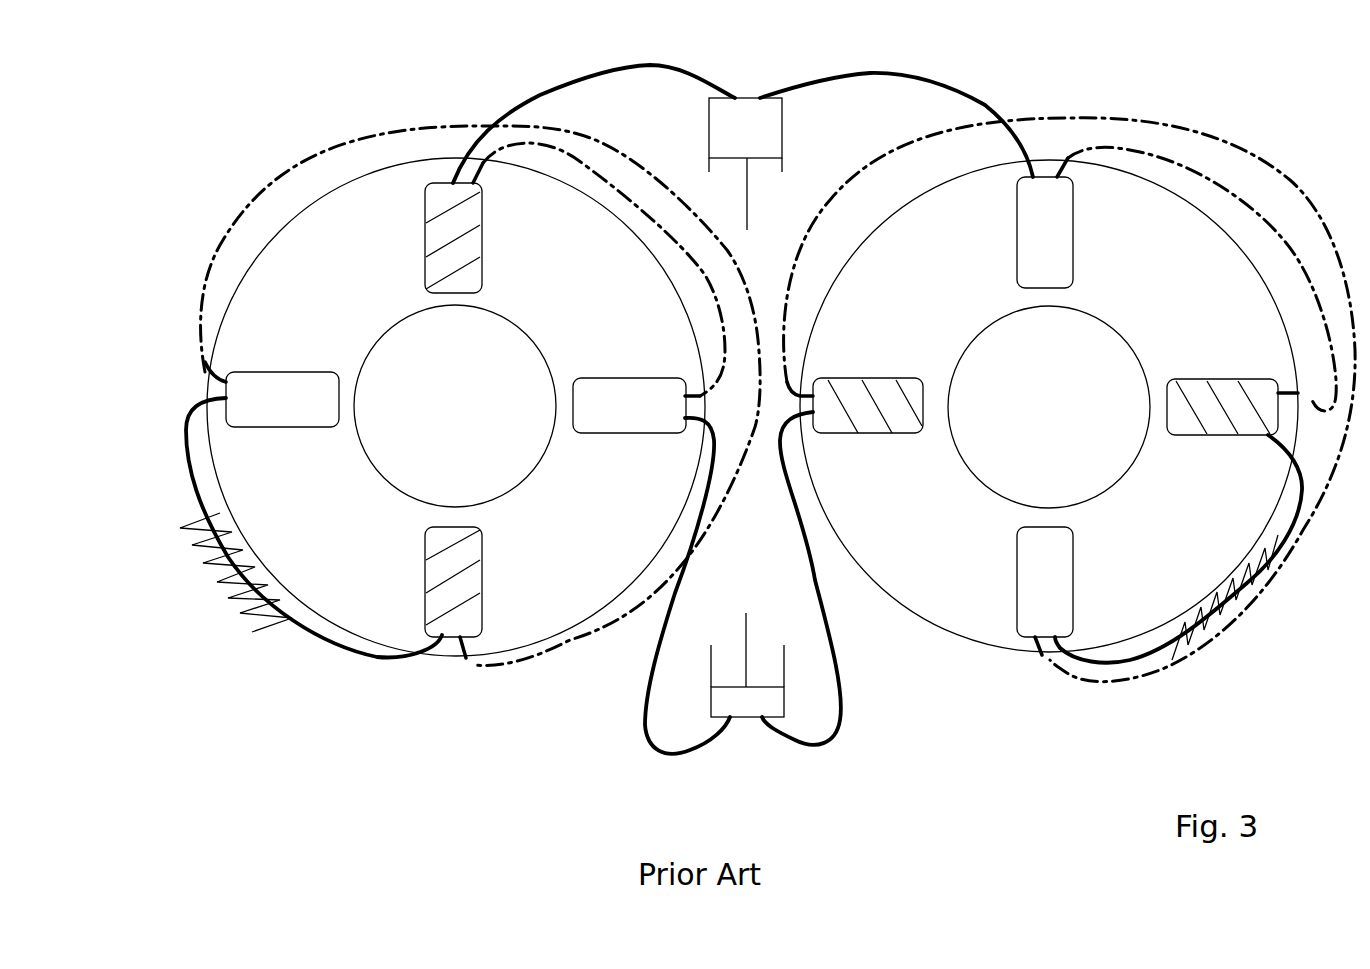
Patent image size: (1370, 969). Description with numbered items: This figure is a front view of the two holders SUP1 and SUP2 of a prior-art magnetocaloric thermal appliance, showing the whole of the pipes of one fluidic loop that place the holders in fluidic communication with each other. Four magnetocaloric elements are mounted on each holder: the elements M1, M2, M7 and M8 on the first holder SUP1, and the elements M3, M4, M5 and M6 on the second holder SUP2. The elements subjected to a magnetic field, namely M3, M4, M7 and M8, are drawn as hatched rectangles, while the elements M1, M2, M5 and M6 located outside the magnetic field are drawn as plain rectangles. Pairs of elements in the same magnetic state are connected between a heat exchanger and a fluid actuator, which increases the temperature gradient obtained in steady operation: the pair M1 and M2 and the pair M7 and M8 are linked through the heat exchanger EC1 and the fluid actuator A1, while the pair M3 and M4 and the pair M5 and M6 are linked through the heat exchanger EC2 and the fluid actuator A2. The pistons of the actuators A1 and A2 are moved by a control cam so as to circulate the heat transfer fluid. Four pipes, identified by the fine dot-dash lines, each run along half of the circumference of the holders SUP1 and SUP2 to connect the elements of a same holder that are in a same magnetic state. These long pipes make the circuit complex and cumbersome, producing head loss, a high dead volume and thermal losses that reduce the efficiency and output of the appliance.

The magnetocaloric element M1 is at (252, 387).
The magnetocaloric element M2 is at (608, 395).
The magnetocaloric element M3 is at (1202, 397).
The magnetocaloric element M4 is at (858, 395).
The magnetocaloric element M5 is at (1058, 588).
The magnetocaloric element M6 is at (1067, 252).
The magnetocaloric element M7 is at (467, 252).
The magnetocaloric element M8 is at (468, 578).
The fluid actuator A1 is at (743, 143).
The fluid actuator A2 is at (746, 700).
The holder SUP1 is at (342, 198).
The holder SUP2 is at (1172, 210).
The heat exchanger EC1 is at (243, 608).
The heat exchanger EC2 is at (1253, 583).